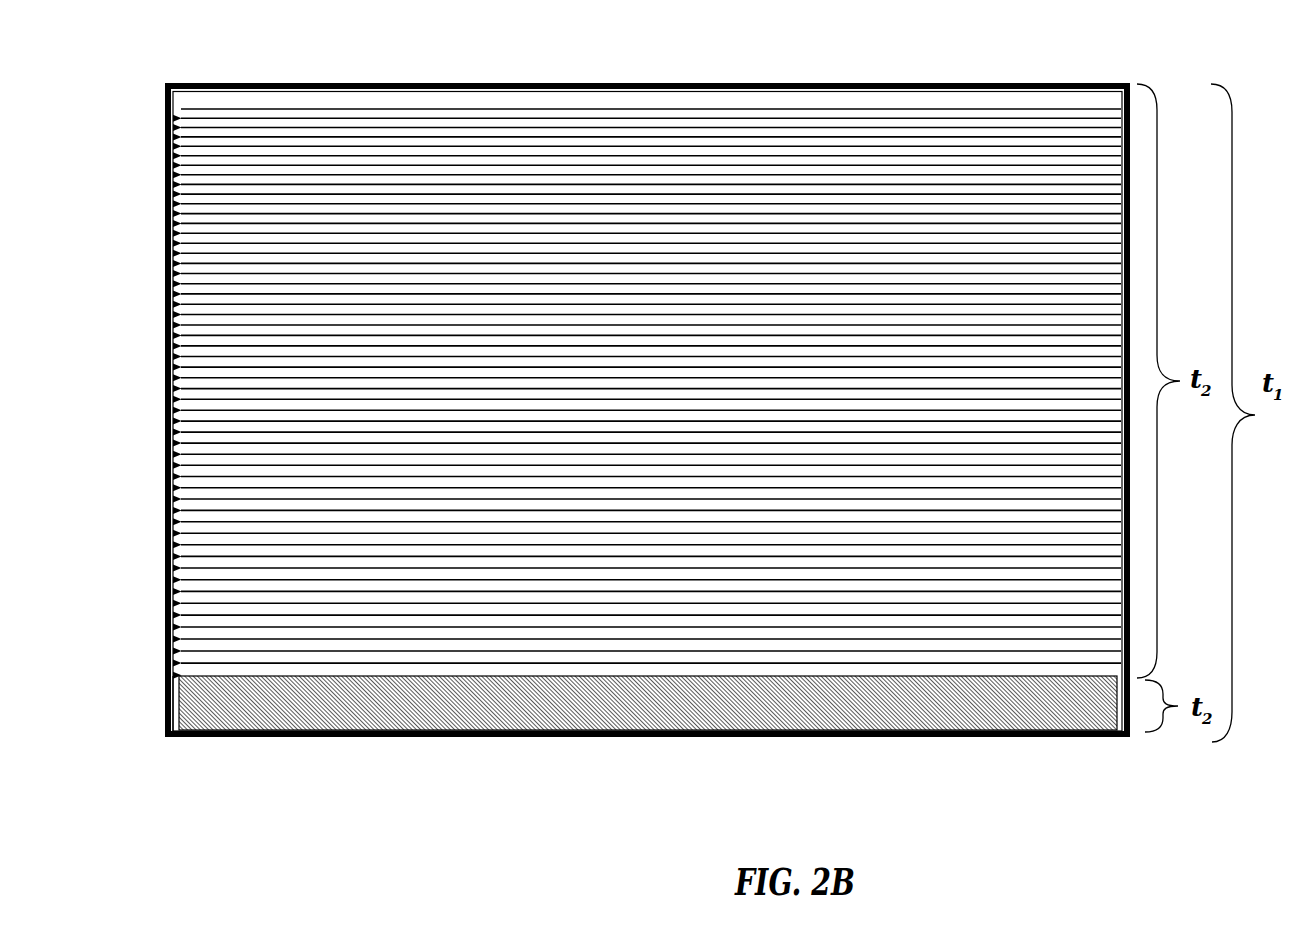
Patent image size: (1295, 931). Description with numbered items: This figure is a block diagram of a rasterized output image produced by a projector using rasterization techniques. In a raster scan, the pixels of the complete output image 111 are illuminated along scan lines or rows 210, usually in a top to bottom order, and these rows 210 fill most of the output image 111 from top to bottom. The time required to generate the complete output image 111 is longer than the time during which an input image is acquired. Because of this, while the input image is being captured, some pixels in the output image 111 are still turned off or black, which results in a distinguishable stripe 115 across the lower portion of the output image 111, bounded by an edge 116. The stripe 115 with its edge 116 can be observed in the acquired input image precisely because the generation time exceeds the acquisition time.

The output image 111 is at (628, 83).
The scan lines or rows 210 is at (780, 108).
The stripe 115 is at (643, 700).
The edge 116 is at (168, 695).